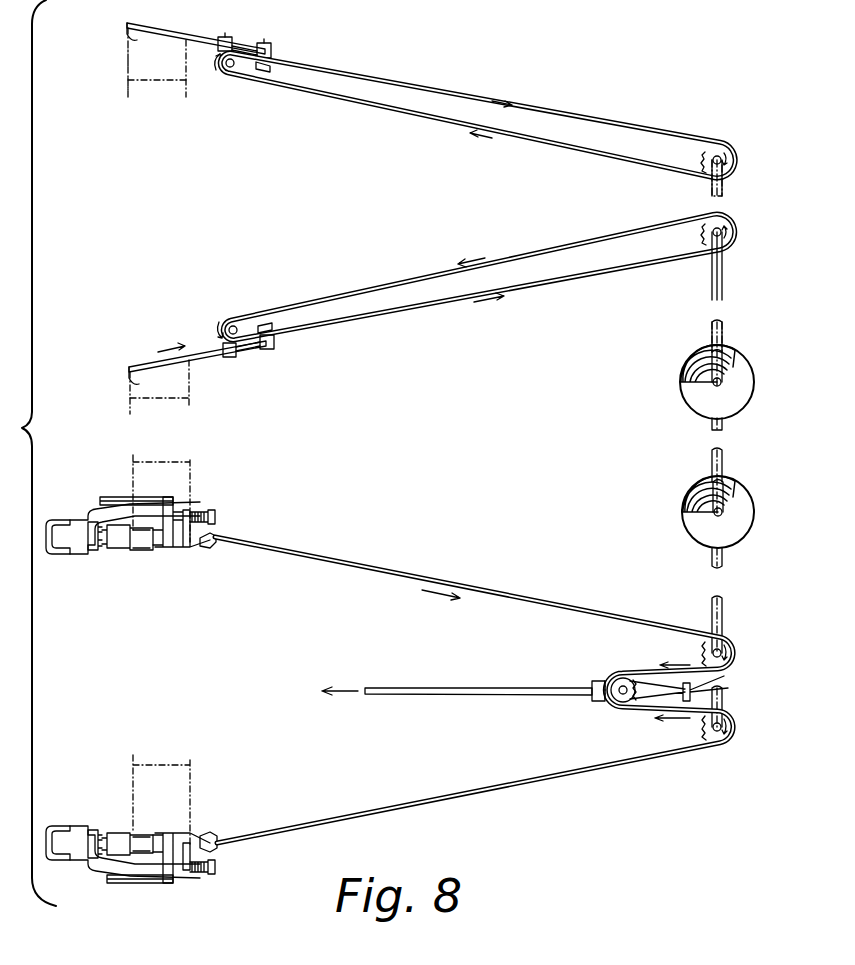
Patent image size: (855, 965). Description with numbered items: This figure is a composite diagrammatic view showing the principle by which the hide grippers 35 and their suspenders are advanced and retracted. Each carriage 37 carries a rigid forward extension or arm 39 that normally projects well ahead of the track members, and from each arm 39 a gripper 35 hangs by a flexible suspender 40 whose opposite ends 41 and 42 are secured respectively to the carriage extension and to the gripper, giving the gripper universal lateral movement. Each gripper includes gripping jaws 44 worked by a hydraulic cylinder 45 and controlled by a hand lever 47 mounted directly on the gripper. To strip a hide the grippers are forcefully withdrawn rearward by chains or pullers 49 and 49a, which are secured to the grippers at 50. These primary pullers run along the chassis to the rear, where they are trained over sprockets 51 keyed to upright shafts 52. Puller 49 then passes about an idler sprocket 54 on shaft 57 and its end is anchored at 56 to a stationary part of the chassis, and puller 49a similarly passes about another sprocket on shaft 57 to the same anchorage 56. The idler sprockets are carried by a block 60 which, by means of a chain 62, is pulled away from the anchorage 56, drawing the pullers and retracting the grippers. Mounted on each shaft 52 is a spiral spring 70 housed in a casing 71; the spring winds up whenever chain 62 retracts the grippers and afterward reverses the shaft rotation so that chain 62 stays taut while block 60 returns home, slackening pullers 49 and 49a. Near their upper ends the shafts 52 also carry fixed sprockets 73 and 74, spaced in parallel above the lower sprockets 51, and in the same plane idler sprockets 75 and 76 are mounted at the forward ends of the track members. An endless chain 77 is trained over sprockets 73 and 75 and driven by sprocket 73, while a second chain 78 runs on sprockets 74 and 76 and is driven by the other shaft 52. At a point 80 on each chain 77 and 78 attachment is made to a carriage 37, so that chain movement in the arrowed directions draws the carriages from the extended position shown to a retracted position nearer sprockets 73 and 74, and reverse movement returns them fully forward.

The hide gripper 35 is at (90, 510).
The carriage 37 is at (258, 40).
The forward extension or arm 39 is at (224, 38).
The flexible suspender 40 is at (157, 68).
The suspender end 41 is at (186, 38).
The suspender end 42 is at (128, 556).
The gripping jaws 44 is at (90, 552).
The hydraulic cylinder 45 is at (127, 537).
The hand lever 47 is at (152, 566).
The chain or puller 49 is at (408, 578).
The chain or puller 49a is at (473, 782).
The chain attachment point 50 is at (218, 537).
The sprocket 51 is at (700, 654).
The upright shaft 52 is at (726, 186).
The idler sprocket 54 is at (636, 698).
The anchorage 56 is at (730, 686).
The shaft 57 is at (624, 680).
The block 60 is at (594, 684).
The chain 62 is at (502, 686).
The spiral spring 70 is at (688, 362).
The casing 71 is at (737, 378).
The sprocket 73 is at (717, 144).
The sprocket 74 is at (702, 250).
The idler sprocket 75 is at (233, 70).
The idler sprocket 76 is at (241, 324).
The endless chain 77 is at (602, 118).
The chain 78 is at (558, 280).
The attachment point 80 is at (272, 66).